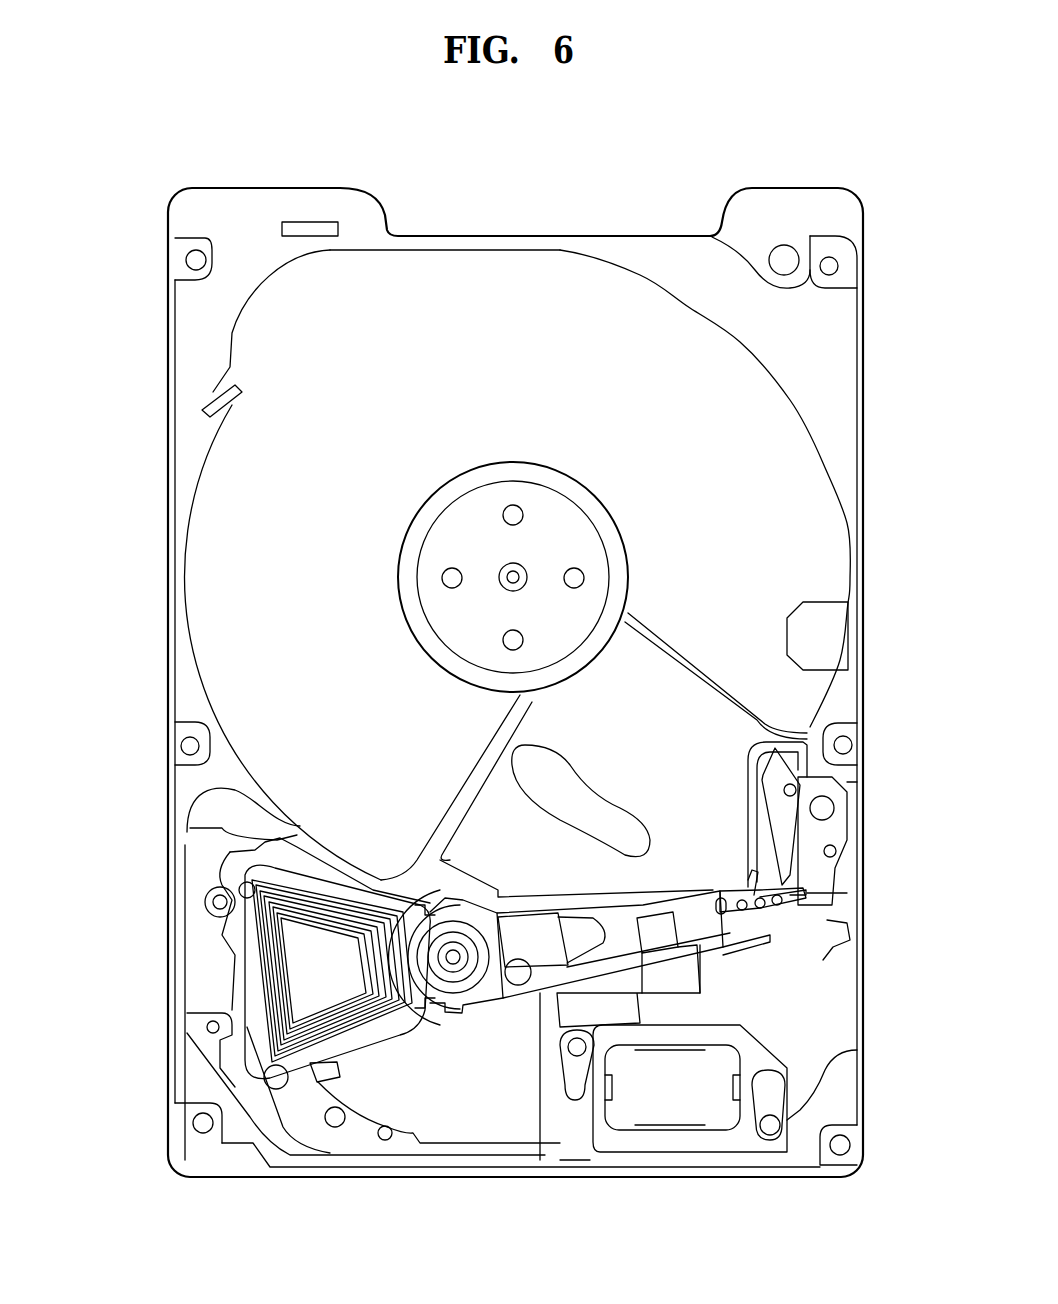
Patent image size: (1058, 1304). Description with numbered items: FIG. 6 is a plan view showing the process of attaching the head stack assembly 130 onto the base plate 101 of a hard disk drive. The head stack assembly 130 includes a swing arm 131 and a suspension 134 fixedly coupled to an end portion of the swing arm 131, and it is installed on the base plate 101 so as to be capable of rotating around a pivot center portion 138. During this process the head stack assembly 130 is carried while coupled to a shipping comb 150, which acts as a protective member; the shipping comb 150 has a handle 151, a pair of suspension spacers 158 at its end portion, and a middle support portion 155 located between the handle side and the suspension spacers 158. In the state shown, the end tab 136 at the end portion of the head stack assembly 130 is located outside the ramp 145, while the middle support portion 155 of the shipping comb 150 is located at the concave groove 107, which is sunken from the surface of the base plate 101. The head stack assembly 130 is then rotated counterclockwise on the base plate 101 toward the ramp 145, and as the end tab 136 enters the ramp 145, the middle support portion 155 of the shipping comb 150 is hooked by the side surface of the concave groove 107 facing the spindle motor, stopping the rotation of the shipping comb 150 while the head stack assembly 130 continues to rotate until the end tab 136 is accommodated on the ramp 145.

The base plate 101 is at (155, 186).
The concave groove 107 is at (670, 1002).
The head stack assembly 130 is at (603, 901).
The swing arm 131 is at (570, 915).
The suspension 134 is at (732, 895).
The end tab 136 is at (800, 893).
The pivot center portion 138 is at (450, 960).
The ramp 145 is at (834, 808).
The shipping comb 150 is at (720, 962).
The handle 151 is at (517, 975).
The middle support portion 155 is at (655, 940).
The suspension spacers 158 is at (765, 897).